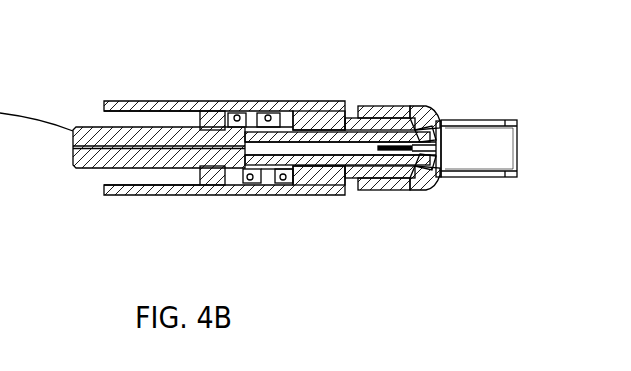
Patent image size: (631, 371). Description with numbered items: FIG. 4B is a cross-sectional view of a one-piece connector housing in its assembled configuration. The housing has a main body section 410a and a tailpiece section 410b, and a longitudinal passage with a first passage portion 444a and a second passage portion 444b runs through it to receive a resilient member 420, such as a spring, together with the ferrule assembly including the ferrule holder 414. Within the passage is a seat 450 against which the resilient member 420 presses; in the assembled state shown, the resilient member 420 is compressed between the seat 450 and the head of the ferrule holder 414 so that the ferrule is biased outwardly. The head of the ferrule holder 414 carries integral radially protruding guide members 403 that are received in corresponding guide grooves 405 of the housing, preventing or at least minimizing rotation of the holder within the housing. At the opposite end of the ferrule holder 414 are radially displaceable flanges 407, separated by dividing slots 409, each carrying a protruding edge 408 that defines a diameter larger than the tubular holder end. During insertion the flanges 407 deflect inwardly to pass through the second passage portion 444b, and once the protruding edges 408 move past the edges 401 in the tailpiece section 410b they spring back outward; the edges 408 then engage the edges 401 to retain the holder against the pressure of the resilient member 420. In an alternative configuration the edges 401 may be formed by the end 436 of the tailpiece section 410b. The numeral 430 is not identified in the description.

The guide grooves 405 is at (78, 104).
The main body section 410a is at (130, 105).
The tailpiece section 410b is at (389, 108).
The guide members 403 is at (213, 112).
The seat 450 is at (278, 118).
The second passage portion 444b is at (323, 123).
The first passage portion 444a is at (143, 177).
The ferrule holder 414 is at (268, 160).
The resilient member 420 is at (276, 178).
The flanges 407 is at (368, 178).
The edges 401 is at (407, 112).
The nose cap 430 is at (443, 115).
The end of the housing tail piece 436 is at (438, 175).
The protruding edge 408 is at (436, 132).
The dividing slots 409 is at (445, 147).